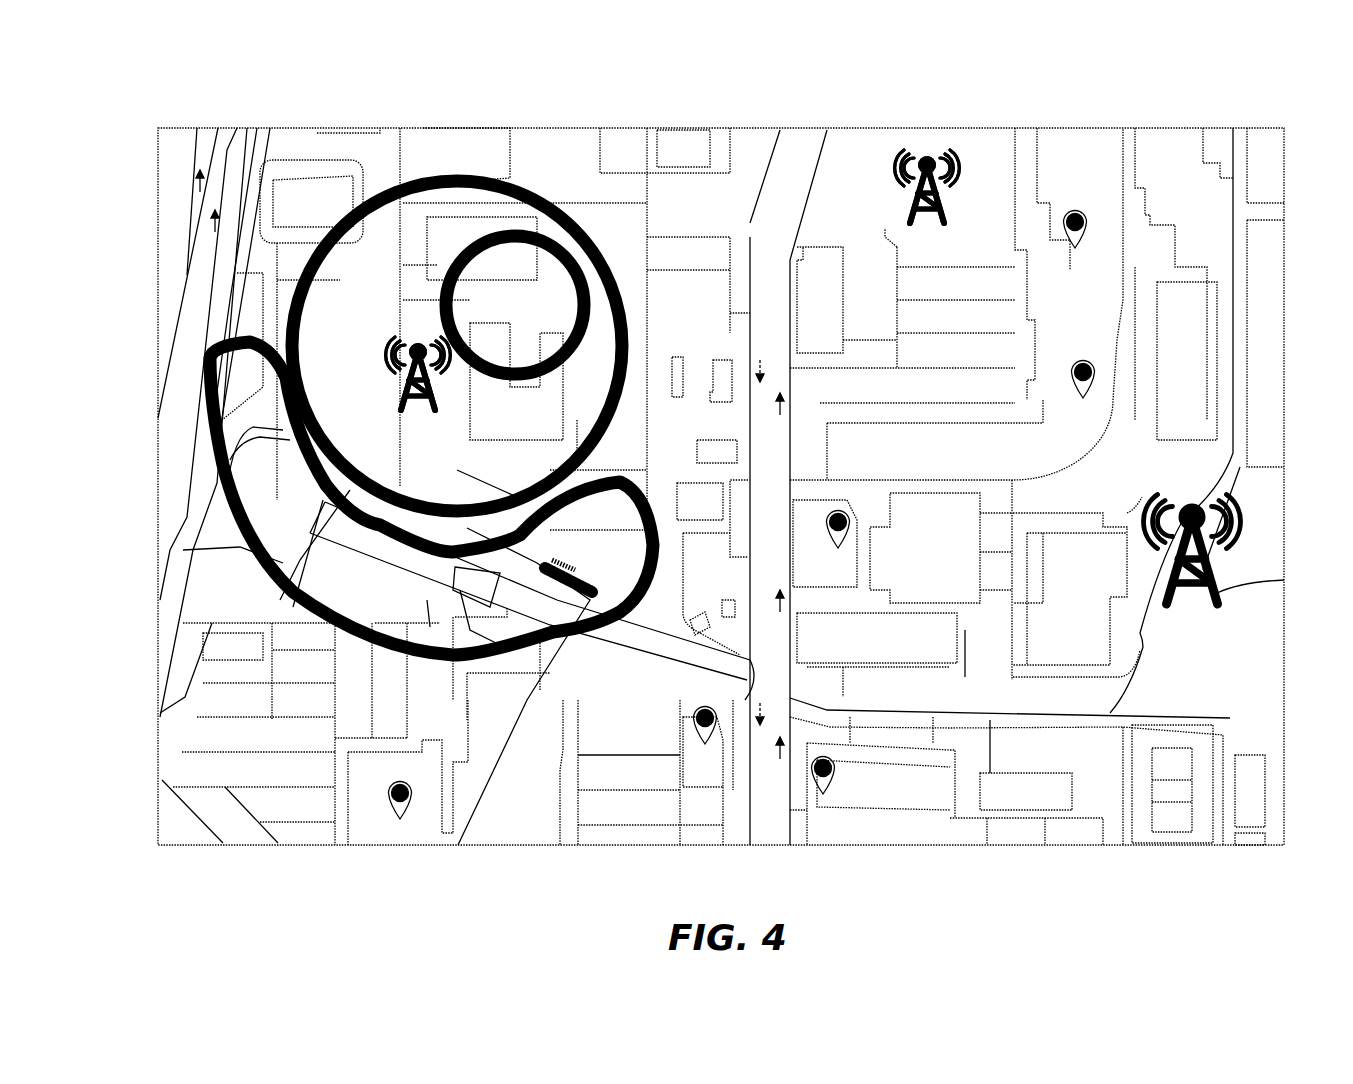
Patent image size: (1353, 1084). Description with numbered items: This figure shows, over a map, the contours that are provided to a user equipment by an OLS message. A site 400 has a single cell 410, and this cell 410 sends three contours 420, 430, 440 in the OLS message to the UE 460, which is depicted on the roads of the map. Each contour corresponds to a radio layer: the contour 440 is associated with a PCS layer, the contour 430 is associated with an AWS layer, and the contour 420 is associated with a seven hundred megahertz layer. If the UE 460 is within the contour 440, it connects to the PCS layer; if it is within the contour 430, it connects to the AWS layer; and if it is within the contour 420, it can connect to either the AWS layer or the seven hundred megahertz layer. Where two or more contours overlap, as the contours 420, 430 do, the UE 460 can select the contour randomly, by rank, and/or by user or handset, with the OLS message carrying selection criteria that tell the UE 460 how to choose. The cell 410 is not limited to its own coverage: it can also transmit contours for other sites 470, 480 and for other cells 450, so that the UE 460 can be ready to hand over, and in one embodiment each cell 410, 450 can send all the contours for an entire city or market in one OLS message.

The site 400 is at (405, 382).
The cell 410 is at (410, 350).
The contour 420 is at (503, 237).
The contour 430 is at (348, 216).
The contour 440 is at (223, 497).
The cell 450 is at (927, 160).
The UE 460 is at (592, 598).
The site 470 is at (943, 215).
The site 480 is at (1217, 593).